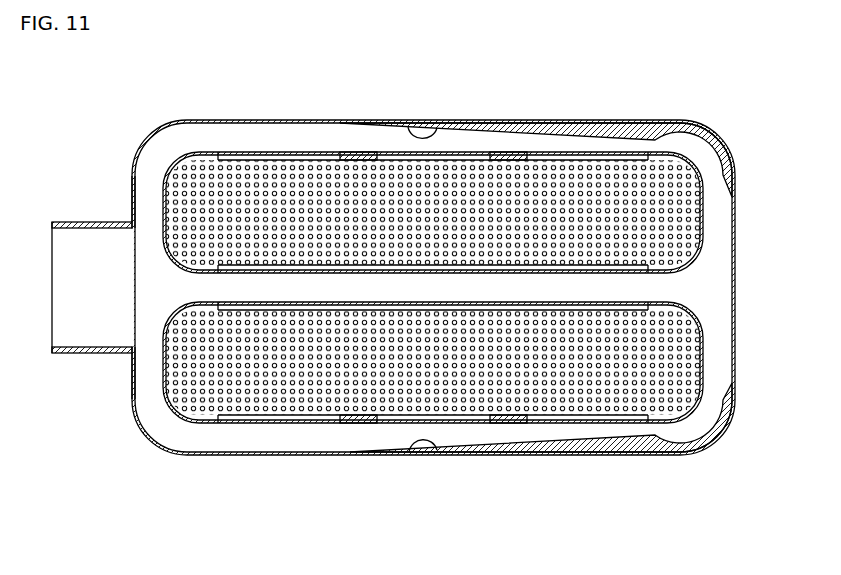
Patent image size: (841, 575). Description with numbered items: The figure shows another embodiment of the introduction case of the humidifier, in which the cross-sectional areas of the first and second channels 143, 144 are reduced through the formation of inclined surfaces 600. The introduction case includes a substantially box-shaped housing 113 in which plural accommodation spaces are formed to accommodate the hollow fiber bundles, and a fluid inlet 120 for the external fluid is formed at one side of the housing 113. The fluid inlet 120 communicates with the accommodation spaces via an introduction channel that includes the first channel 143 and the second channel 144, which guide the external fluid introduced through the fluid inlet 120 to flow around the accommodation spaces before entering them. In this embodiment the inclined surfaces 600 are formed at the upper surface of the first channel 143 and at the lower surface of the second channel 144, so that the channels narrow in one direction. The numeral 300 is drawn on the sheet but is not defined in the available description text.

The housing assembly 300 is at (141, 126).
The housing 113 is at (135, 197).
The fluid inlet 120 is at (66, 314).
The first channel 143 is at (348, 138).
The second channel 144 is at (312, 440).
The inclined surfaces 600 is at (408, 125).